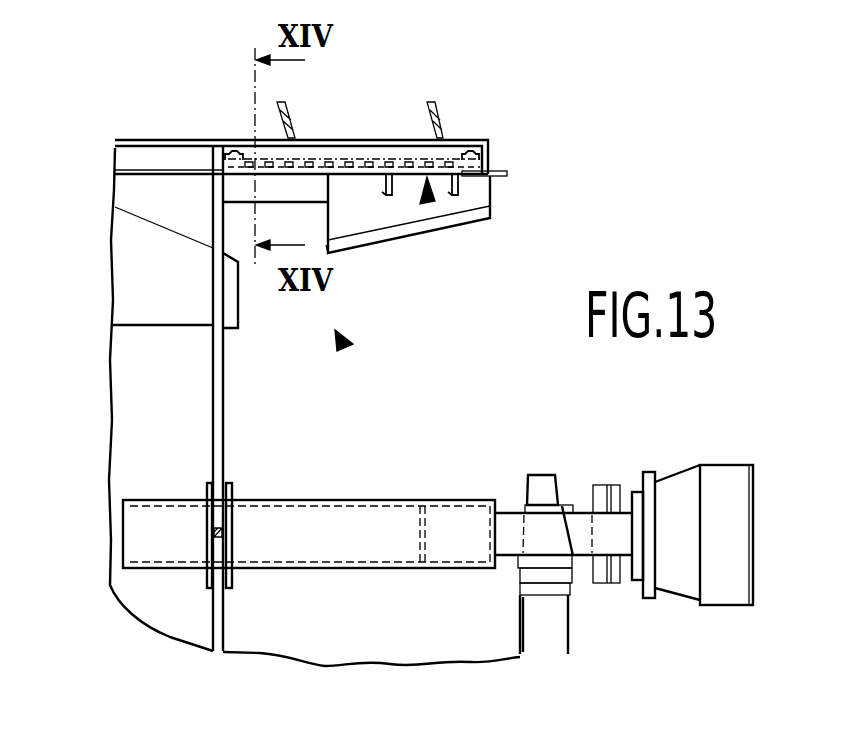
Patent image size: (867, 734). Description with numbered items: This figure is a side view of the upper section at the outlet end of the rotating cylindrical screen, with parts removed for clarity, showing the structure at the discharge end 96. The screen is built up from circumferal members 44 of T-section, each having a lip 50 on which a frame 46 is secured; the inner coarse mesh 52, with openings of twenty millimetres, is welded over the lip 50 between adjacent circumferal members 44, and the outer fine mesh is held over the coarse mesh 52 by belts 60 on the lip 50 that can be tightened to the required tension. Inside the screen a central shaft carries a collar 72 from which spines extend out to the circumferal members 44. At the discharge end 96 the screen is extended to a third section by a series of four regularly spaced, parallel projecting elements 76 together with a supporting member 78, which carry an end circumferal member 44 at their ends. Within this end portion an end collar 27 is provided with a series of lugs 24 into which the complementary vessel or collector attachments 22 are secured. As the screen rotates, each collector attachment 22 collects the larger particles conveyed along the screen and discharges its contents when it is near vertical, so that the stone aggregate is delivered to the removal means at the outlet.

The circumferal member 44 is at (219, 156).
The frame 46 is at (365, 152).
The lip 50 is at (225, 172).
The inner coarse mesh 52 is at (213, 194).
The belt 60 is at (232, 153).
The collar 72 is at (228, 497).
The projecting element 76 is at (300, 188).
The supporting member 78 is at (460, 143).
The collector attachment 22 is at (418, 230).
The lug 24 is at (395, 196).
The end collar 27 is at (430, 198).
The discharge end 96 is at (343, 346).